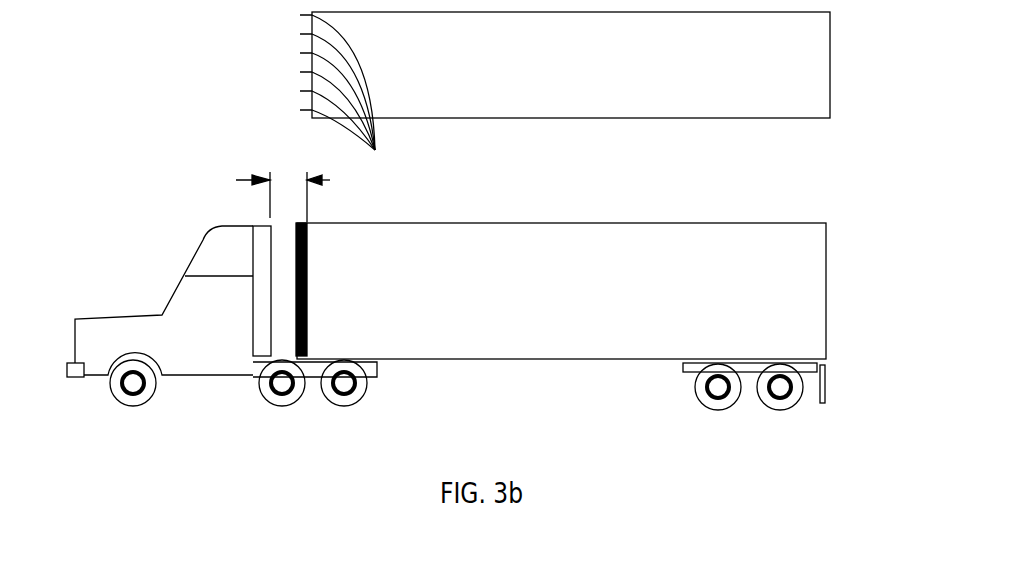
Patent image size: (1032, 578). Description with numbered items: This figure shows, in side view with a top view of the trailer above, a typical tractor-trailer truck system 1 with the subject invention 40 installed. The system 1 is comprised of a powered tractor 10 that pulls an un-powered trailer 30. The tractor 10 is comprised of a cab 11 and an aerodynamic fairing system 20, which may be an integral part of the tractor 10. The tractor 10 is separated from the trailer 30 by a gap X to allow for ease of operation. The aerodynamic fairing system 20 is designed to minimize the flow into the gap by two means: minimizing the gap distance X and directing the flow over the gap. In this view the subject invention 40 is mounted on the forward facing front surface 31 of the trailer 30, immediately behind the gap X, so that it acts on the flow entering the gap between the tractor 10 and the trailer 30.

The tractor-trailer truck system 1 is at (68, 74).
The tractor 10 is at (97, 212).
The cab 11 is at (178, 308).
The aerodynamic fairing system 20 is at (209, 260).
The trailer 30 is at (907, 275).
The forward facing front surface 31 is at (313, 13).
The subject invention 40 is at (307, 226).
The gap X is at (238, 180).